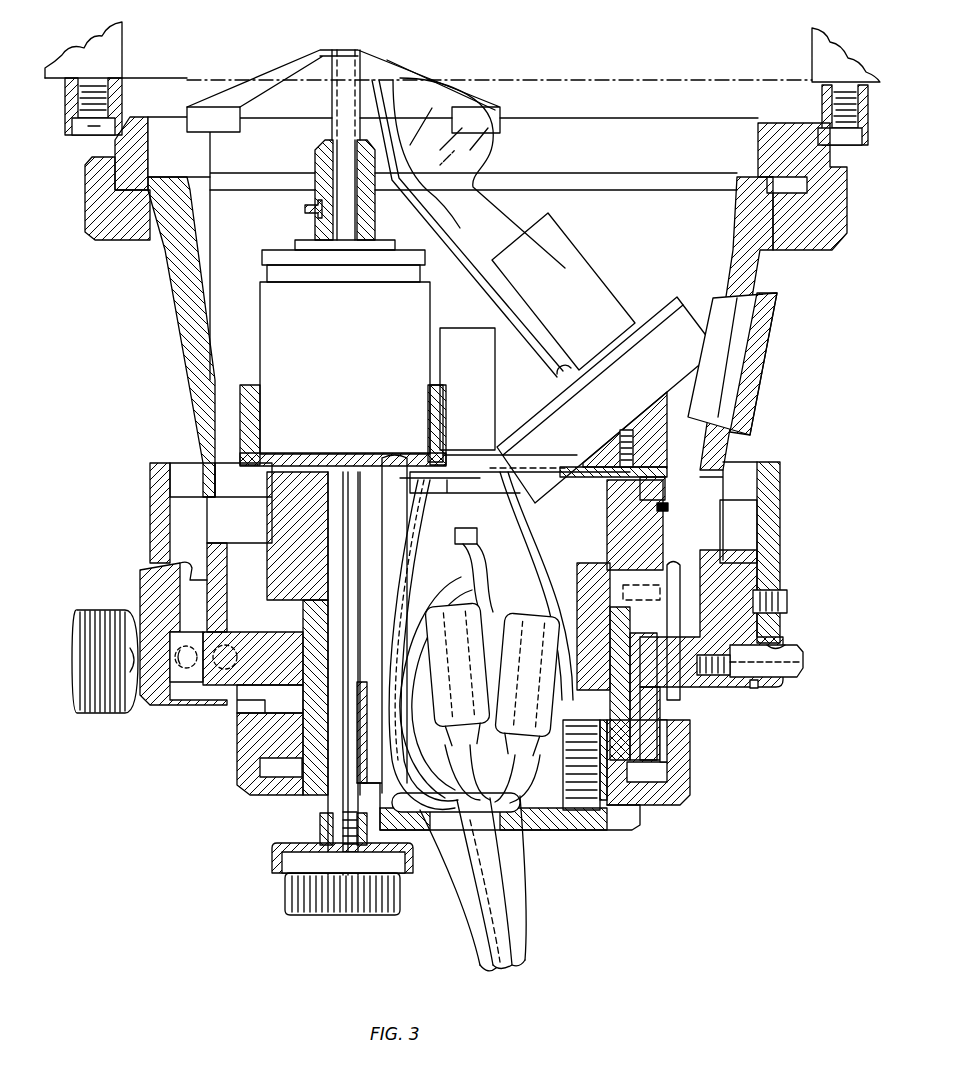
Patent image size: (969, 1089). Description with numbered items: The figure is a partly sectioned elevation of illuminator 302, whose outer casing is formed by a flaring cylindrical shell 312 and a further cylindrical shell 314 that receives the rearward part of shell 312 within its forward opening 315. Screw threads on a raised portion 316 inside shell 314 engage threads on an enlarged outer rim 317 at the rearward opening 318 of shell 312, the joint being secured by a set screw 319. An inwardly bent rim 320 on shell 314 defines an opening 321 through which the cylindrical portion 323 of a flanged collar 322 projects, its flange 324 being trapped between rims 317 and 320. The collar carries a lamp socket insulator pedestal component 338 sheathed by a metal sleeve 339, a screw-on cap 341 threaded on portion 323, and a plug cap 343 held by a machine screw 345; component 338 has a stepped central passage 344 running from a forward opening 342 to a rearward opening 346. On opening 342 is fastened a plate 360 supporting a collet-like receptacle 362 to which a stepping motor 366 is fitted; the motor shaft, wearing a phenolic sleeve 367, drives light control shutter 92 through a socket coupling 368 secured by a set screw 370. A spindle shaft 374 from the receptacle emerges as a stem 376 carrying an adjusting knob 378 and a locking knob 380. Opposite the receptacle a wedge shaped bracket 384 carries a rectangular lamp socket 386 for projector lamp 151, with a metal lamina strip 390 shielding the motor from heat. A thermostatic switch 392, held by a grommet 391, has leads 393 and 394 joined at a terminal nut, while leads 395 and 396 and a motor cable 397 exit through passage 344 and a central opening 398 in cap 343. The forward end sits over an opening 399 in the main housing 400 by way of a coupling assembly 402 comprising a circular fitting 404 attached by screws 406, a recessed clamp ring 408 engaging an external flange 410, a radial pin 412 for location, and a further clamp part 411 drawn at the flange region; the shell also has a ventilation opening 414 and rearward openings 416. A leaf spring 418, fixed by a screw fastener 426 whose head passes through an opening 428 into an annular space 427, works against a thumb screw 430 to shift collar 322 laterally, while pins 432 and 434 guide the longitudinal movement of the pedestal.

The light control shutter 92 is at (316, 50).
The projector lamp 151 is at (570, 262).
The illuminator 302 is at (195, 752).
The cylindrical shell 312 is at (178, 312).
The cylindrical shell 314 is at (152, 476).
The forward opening 315 is at (170, 470).
The raised portion 316 is at (162, 545).
The enlarged outer rim 317 is at (194, 562).
The rearward opening 318 is at (226, 576).
The set screw 319 is at (788, 605).
The flange-like rim 320 is at (178, 688).
The opening 321 is at (690, 698).
The flanged collar 322 is at (240, 632).
The cylindrical portion 323 is at (285, 740).
The flange 324 is at (245, 688).
The lamp socket insulator pedestal component 338 is at (684, 504).
The metal sleeve 339 is at (620, 620).
The screw-on cap 341 is at (686, 772).
The forward opening 342 is at (612, 520).
The plug cap 343 is at (637, 818).
The central passage 344 is at (578, 549).
The machine screw 345 is at (583, 805).
The rearward opening 346 is at (382, 624).
The plate 360 is at (590, 478).
The collet-like receptacle 362 is at (246, 400).
The stepping motor 366 is at (285, 300).
The heat insulating phenolic sleeve 367 is at (366, 222).
The socket coupling 368 is at (318, 165).
The set screw 370 is at (306, 212).
The spindle shaft 374 is at (340, 800).
The stem 376 is at (282, 862).
The shutter position adjusting knob 378 is at (310, 916).
The locking knob 380 is at (276, 876).
The wedge shaped bracket 384 is at (690, 440).
The lamp socket 386 is at (662, 345).
The metal lamina strip 390 is at (488, 292).
The grommet 391 is at (476, 455).
The thermostatic switch 392 is at (470, 376).
The electrical lead 393 is at (506, 580).
The electrical lead 394 is at (468, 545).
The electrical lead 395 is at (497, 500).
The electrical lead 396 is at (445, 600).
The cable 397 is at (460, 890).
The central opening 398 is at (505, 830).
The housing opening 399 is at (812, 45).
The main housing 400 is at (105, 60).
The coupling assembly 402 is at (78, 158).
The circular fitting 404 is at (66, 112).
The screws 406 is at (836, 118).
The recessed clamp ring 408 is at (95, 218).
The external flange 410 is at (157, 185).
The flange 411 is at (758, 137).
The radial pin 412 is at (780, 183).
The ventilation opening 414 is at (730, 318).
The openings 416 is at (218, 517).
The leaf spring 418 is at (753, 690).
The screw fastener 426 is at (790, 664).
The annular space 427 is at (757, 690).
The opening 428 is at (780, 655).
The thumb screw 430 is at (100, 618).
The pin 432 is at (674, 575).
The pin 434 is at (640, 590).